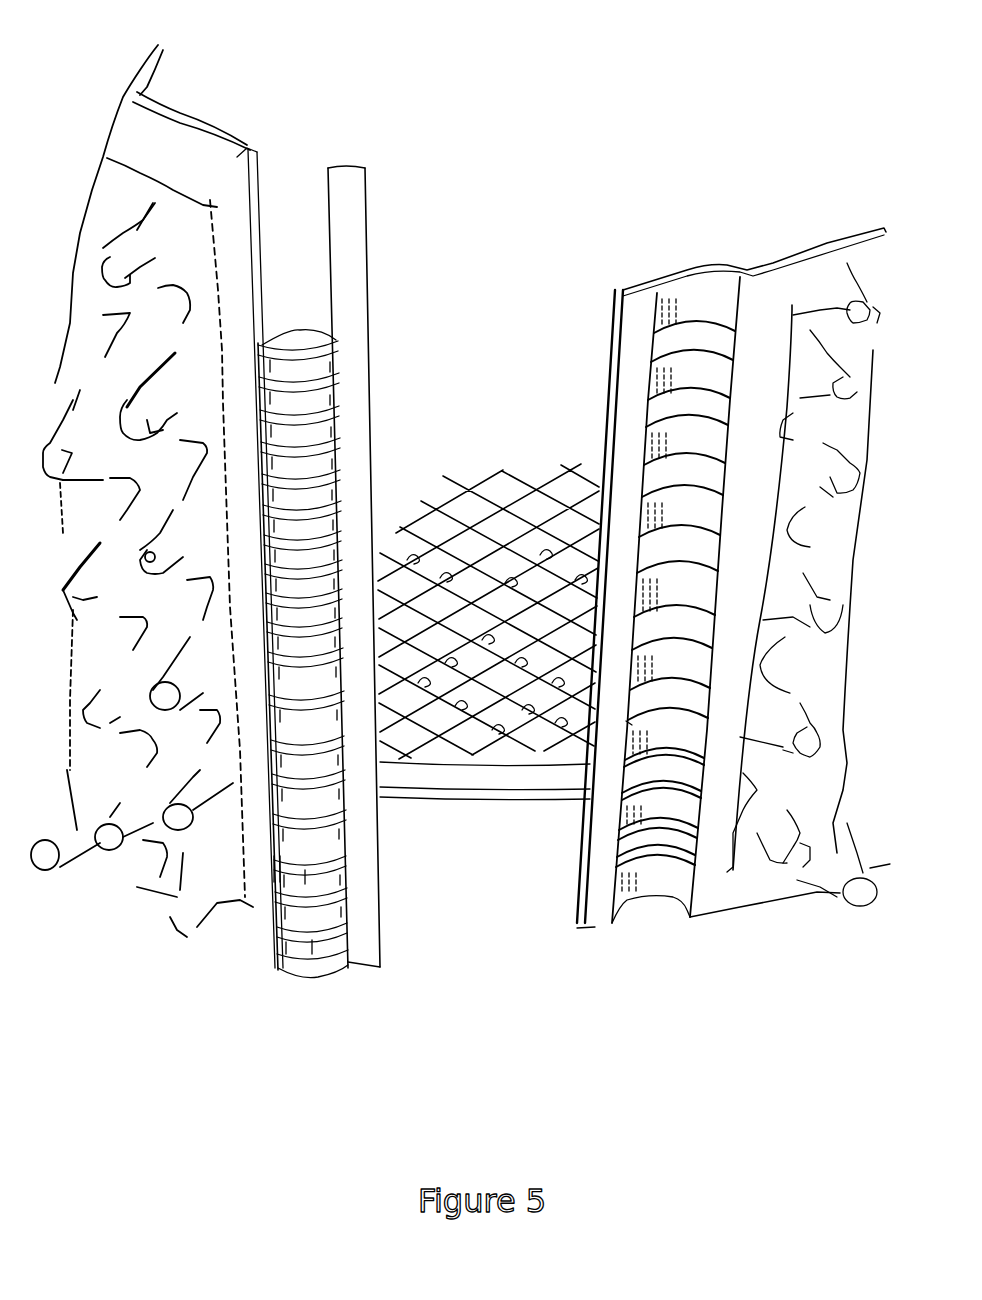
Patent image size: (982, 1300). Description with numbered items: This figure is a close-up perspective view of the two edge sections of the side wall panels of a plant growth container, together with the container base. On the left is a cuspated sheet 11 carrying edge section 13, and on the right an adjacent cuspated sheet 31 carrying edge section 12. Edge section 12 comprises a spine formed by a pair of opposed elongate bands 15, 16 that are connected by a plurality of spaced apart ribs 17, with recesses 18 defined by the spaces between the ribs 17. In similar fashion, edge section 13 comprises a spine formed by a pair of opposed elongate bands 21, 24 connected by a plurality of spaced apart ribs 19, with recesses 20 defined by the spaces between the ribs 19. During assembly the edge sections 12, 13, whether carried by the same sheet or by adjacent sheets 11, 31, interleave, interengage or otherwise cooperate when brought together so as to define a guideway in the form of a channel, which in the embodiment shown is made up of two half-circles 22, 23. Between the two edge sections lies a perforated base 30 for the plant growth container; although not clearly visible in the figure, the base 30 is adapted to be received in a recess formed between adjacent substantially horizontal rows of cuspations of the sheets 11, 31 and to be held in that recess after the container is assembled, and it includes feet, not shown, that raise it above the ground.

The cuspated sheet 11 is at (180, 117).
The edge section 12 is at (588, 935).
The edge section 13 is at (378, 965).
The elongate band 15 is at (632, 315).
The elongate band 16 is at (766, 282).
The ribs 17 is at (643, 817).
The recesses 18 is at (630, 779).
The ribs 19 is at (280, 908).
The recesses 20 is at (317, 943).
The elongate band 21 is at (345, 165).
The half-circle 22 is at (700, 250).
The half-circle 23 is at (285, 327).
The elongate band 24 is at (235, 175).
The perforated base 30 is at (477, 483).
The sheet 31 is at (825, 215).